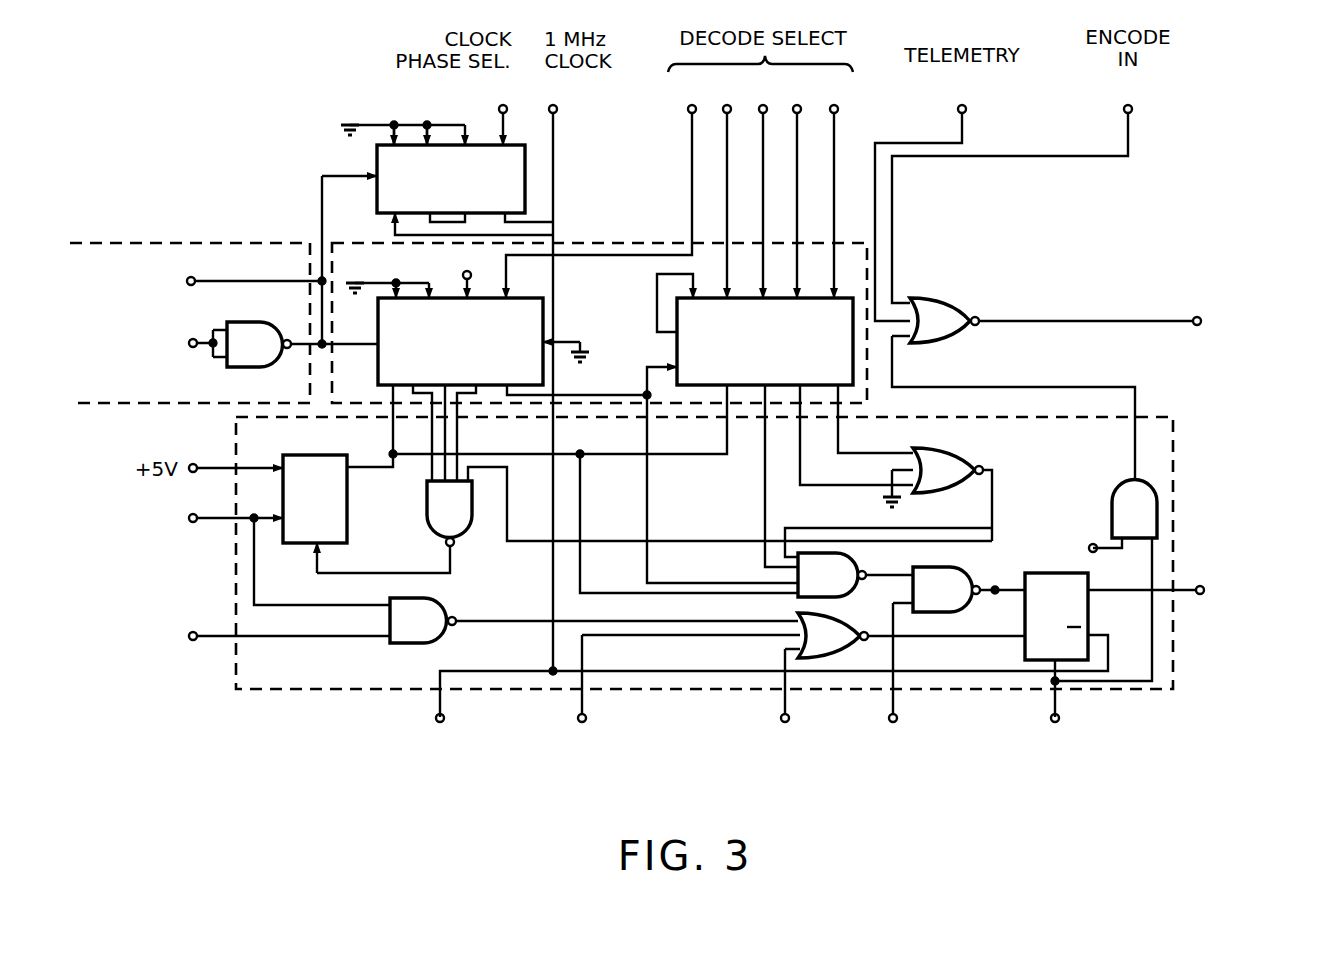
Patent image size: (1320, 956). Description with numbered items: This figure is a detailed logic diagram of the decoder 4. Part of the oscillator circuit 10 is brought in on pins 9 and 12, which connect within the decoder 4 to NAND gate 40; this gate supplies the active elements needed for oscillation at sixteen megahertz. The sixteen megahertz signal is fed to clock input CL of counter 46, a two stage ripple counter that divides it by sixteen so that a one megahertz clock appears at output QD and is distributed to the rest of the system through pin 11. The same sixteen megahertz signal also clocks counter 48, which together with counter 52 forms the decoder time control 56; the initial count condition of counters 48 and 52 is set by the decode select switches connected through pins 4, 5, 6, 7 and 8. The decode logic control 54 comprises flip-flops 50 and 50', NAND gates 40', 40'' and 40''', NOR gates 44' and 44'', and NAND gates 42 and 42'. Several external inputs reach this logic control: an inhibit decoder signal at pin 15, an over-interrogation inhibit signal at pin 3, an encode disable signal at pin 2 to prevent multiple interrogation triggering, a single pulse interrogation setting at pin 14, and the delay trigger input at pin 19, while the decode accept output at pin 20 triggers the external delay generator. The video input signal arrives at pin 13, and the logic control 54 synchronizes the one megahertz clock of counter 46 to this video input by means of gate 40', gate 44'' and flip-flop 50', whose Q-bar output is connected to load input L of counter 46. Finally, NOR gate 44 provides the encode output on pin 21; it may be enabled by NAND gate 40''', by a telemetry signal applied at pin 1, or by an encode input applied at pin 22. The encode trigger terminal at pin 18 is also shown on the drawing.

The telemetry pin 1 is at (962, 105).
The encode disable input pin 2 is at (786, 716).
The over-interrogation inhibit pin 3 is at (585, 716).
The decoder 4 is at (763, 105).
The decode select pin 5 is at (834, 105).
The decode select pin 6 is at (797, 105).
The decode select pin 7 is at (727, 105).
The decode select pin 8 is at (692, 105).
The oscillator pin 9 is at (194, 278).
The oscillator circuit 10 is at (188, 243).
The one megahertz clock pin 11 is at (553, 105).
The oscillator input pin 12 is at (193, 339).
The video input pin 13 is at (196, 513).
The single pulse interrogation pin 14 is at (896, 716).
The inhibit pin 15 is at (196, 632).
The encode trigger terminal 18 is at (443, 716).
The delay trigger input pin 19 is at (1057, 716).
The decode accept output pin 20 is at (1200, 586).
The encode output pin 21 is at (1196, 317).
The encode input pin 22 is at (1128, 105).
The NAND gate 40 is at (302, 271).
The NAND gate 40' is at (594, 607).
The NAND gate 40'' is at (959, 576).
The NAND gate 40''' is at (1106, 571).
The NAND gate 42 is at (689, 506).
The NAND gate 42' is at (746, 525).
The NOR gate 44 is at (1042, 377).
The NOR gate 44' is at (888, 491).
The NOR gate 44'' is at (803, 631).
The counter 46 is at (377, 210).
The counter 48 is at (528, 298).
The flip-flop 50 is at (366, 503).
The flip-flop 50' is at (774, 631).
The counter 52 is at (677, 348).
The decode logic control 54 is at (282, 689).
The decoder time control 56 is at (630, 243).